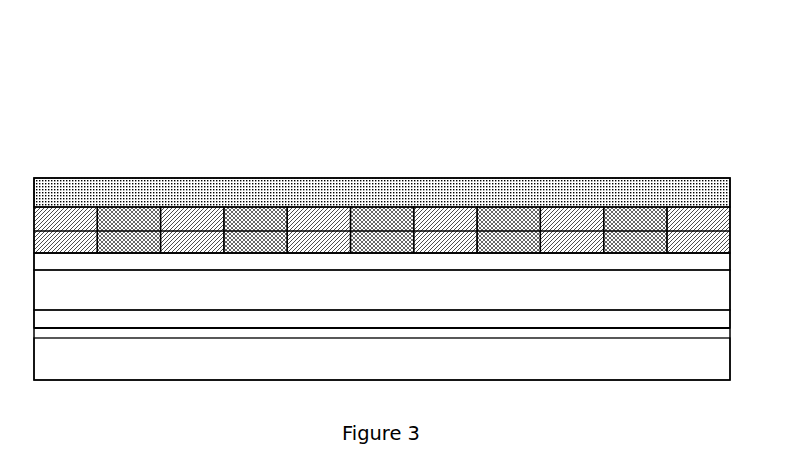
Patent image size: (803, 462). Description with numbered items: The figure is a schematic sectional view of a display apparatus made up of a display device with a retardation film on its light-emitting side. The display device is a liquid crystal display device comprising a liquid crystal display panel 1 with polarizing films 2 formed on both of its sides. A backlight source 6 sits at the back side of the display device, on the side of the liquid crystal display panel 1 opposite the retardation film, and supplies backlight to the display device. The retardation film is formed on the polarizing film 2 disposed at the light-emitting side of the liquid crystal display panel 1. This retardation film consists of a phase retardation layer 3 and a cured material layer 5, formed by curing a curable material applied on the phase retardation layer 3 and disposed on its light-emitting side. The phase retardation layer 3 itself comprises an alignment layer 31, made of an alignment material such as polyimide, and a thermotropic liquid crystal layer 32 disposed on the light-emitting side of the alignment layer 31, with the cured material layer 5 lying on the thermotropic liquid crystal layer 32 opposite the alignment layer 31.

The liquid crystal display panel 1 is at (390, 290).
The polarizing films 2 is at (259, 320).
The phase retardation layer 3 is at (382, 170).
The alignment layer 31 is at (142, 230).
The thermotropic liquid crystal layer 32 is at (180, 120).
The cured material layer 5 is at (512, 195).
The backlight source 6 is at (557, 358).